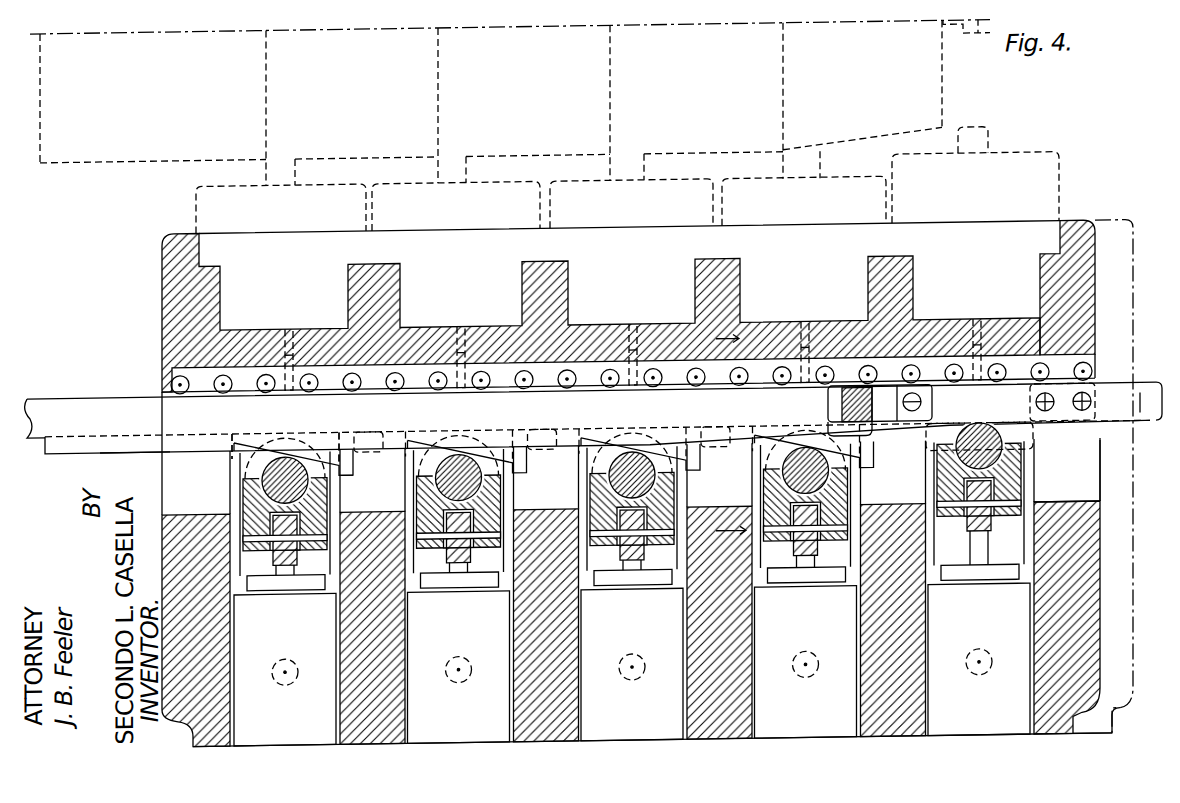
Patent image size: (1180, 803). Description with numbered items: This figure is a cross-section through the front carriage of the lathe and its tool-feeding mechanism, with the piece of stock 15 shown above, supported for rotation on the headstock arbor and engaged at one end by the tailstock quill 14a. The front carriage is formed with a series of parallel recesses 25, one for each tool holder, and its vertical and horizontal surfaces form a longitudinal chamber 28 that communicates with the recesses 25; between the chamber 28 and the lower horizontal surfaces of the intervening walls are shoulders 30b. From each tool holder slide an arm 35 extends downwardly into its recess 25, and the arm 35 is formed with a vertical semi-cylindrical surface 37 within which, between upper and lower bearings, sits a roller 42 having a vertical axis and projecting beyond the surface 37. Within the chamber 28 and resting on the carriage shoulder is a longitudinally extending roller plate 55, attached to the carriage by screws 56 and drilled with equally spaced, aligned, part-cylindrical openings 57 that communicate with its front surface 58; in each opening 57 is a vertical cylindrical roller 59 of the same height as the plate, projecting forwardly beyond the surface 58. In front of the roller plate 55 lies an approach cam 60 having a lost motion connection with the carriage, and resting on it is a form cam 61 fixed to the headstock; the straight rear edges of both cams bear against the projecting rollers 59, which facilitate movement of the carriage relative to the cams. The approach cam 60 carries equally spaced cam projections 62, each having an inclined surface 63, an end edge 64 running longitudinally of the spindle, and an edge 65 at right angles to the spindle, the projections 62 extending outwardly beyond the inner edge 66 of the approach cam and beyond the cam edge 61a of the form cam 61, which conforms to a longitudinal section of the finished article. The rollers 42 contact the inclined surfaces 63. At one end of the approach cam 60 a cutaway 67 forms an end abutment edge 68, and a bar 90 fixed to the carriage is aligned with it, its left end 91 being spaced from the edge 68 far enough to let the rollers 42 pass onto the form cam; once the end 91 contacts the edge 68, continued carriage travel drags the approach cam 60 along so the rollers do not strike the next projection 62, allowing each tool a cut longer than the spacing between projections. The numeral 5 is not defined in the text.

The piece of stock 15 is at (152, 162).
The quill 14a is at (963, 35).
The part-cylindrical openings 57 is at (1072, 337).
The vertical cylindrical roller 59 is at (223, 383).
The screws 56 is at (293, 353).
The approach cam 60 is at (37, 396).
The form cam 61 is at (82, 442).
The cam edge 61a is at (137, 452).
The end abutment edge 68 is at (838, 410).
The cutaway 67 is at (845, 412).
The left end of abutment bar 91 is at (893, 402).
The front surface of roller plate 58 is at (1093, 395).
The roller plate 55 is at (1078, 374).
The bar 90 is at (1148, 419).
The recess 25 is at (1015, 556).
The longitudinal chamber 28 is at (1073, 470).
The shoulders 30b is at (1085, 498).
The arm 35 is at (1010, 492).
The vertical semi-cylindrical surface 37 is at (965, 490).
The edge 65 is at (353, 441).
The inner edge 66 is at (548, 428).
The inclined surface 63 is at (228, 468).
The cam projections 62 is at (358, 455).
The end edge 64 is at (349, 473).
The roller 42 is at (287, 470).
The section indicator 5 is at (724, 434).